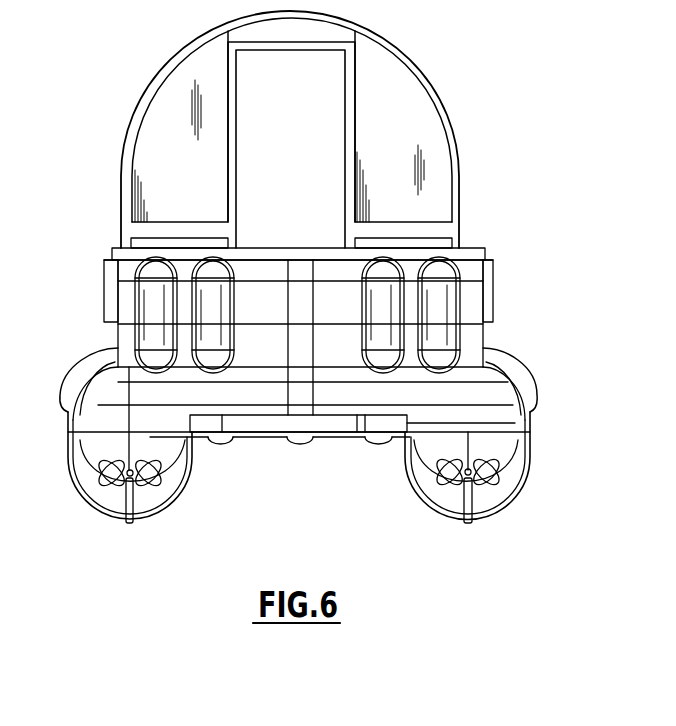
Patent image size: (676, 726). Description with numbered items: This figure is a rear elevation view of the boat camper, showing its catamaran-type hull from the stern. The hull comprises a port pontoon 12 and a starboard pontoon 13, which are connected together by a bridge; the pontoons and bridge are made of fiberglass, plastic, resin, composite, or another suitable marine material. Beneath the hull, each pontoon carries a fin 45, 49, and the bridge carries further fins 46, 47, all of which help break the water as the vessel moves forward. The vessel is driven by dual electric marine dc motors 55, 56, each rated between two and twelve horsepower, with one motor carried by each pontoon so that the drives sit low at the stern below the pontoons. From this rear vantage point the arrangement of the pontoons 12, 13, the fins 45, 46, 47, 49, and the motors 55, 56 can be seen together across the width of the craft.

The port pontoon 12 is at (167, 513).
The starboard pontoon 13 is at (528, 497).
The fin 45 is at (222, 443).
The fin 46 is at (372, 443).
The fin 47 is at (297, 443).
The fin 49 is at (128, 527).
The electric marine dc motor 55 is at (102, 473).
The electric marine dc motor 56 is at (497, 473).